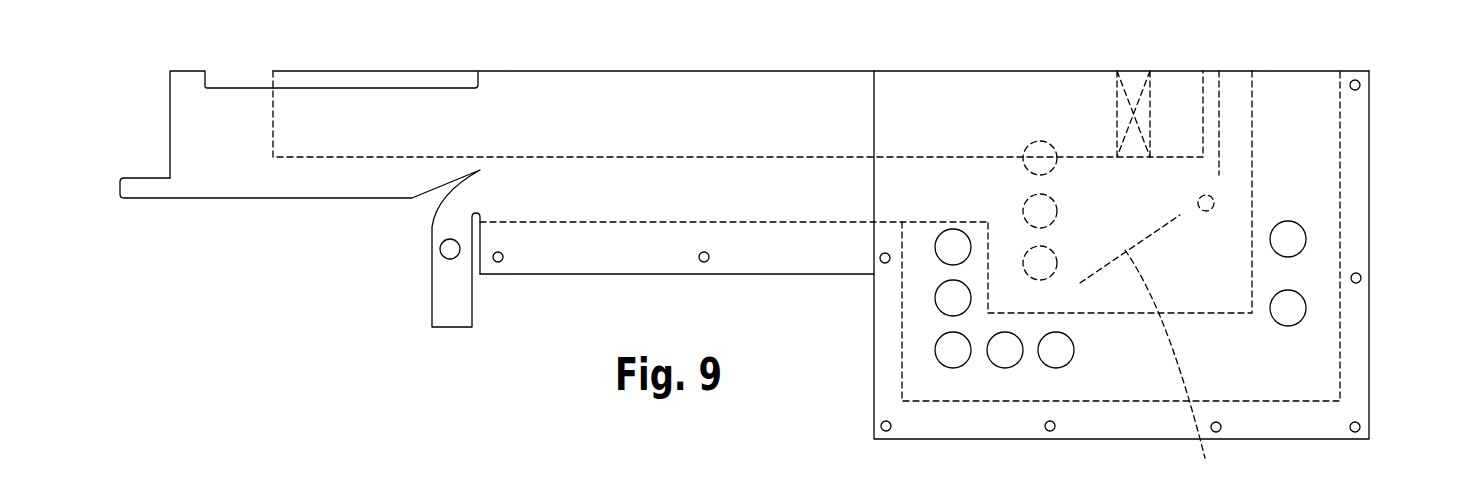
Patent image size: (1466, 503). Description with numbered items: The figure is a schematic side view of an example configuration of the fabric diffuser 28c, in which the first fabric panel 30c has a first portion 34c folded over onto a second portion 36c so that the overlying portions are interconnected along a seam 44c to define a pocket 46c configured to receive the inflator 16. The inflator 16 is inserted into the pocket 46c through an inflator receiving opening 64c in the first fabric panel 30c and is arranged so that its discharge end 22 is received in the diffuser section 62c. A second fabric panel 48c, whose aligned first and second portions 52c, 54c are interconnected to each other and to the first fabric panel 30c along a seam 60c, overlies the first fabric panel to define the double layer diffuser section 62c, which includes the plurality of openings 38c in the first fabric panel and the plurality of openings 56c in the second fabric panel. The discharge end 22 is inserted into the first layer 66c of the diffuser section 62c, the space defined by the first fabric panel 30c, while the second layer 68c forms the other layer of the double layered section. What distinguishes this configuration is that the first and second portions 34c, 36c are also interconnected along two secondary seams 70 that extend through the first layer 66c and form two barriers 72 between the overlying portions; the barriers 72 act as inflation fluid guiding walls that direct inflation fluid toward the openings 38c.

The inflator 16 is at (370, 78).
The discharge end 22 is at (1137, 72).
The fabric diffuser 28c is at (591, 105).
The first fabric panel 30c is at (630, 240).
The first portion of the first fabric panel 34c is at (559, 238).
The second portion of the first fabric panel 36c is at (1385, 105).
The openings 38c is at (1030, 248).
The seam 44c is at (733, 223).
The pocket 46c is at (960, 106).
The second fabric panel 48c is at (1350, 356).
The first portion of the second fabric panel 52c is at (1343, 410).
The second portion of the second fabric panel 54c is at (1385, 131).
The openings 56c is at (937, 357).
The seam 60c is at (1112, 402).
The diffuser section 62c is at (1242, 142).
The inflator receiving opening 64c is at (237, 87).
The first layer of the diffuser section 66c is at (1236, 260).
The second layer of the diffuser section 68c is at (1304, 388).
The secondary seams 70 is at (1222, 126).
The barriers 72 is at (1167, 351).